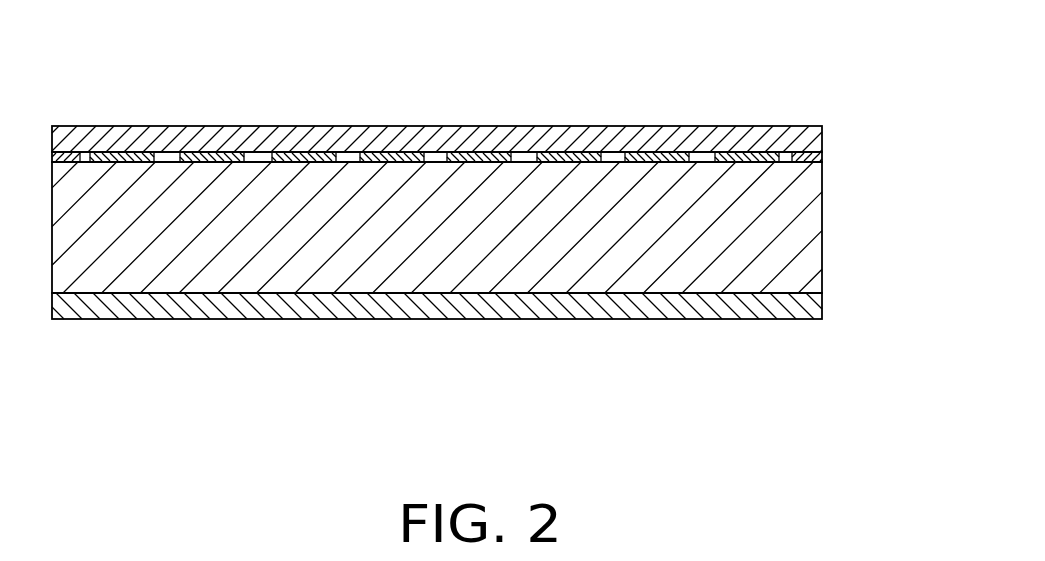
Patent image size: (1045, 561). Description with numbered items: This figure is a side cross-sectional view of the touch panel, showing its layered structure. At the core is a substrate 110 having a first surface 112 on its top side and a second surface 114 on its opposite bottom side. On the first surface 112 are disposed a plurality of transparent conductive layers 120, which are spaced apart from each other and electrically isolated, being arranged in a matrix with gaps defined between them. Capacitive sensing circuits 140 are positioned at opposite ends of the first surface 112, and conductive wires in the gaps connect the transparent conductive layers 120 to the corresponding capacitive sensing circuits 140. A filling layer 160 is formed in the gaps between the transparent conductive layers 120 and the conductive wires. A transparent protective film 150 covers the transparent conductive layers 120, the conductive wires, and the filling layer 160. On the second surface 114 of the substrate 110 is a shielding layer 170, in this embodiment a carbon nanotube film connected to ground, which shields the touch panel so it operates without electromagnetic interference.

The substrate 110 is at (807, 247).
The first surface 112 is at (807, 162).
The second surface 114 is at (812, 293).
The transparent conductive layers 120 is at (563, 152).
The capacitive sensing circuit 140 is at (822, 156).
The transparent protective film 150 is at (725, 133).
The filling layer 160 is at (618, 152).
The shielding layer 170 is at (633, 296).